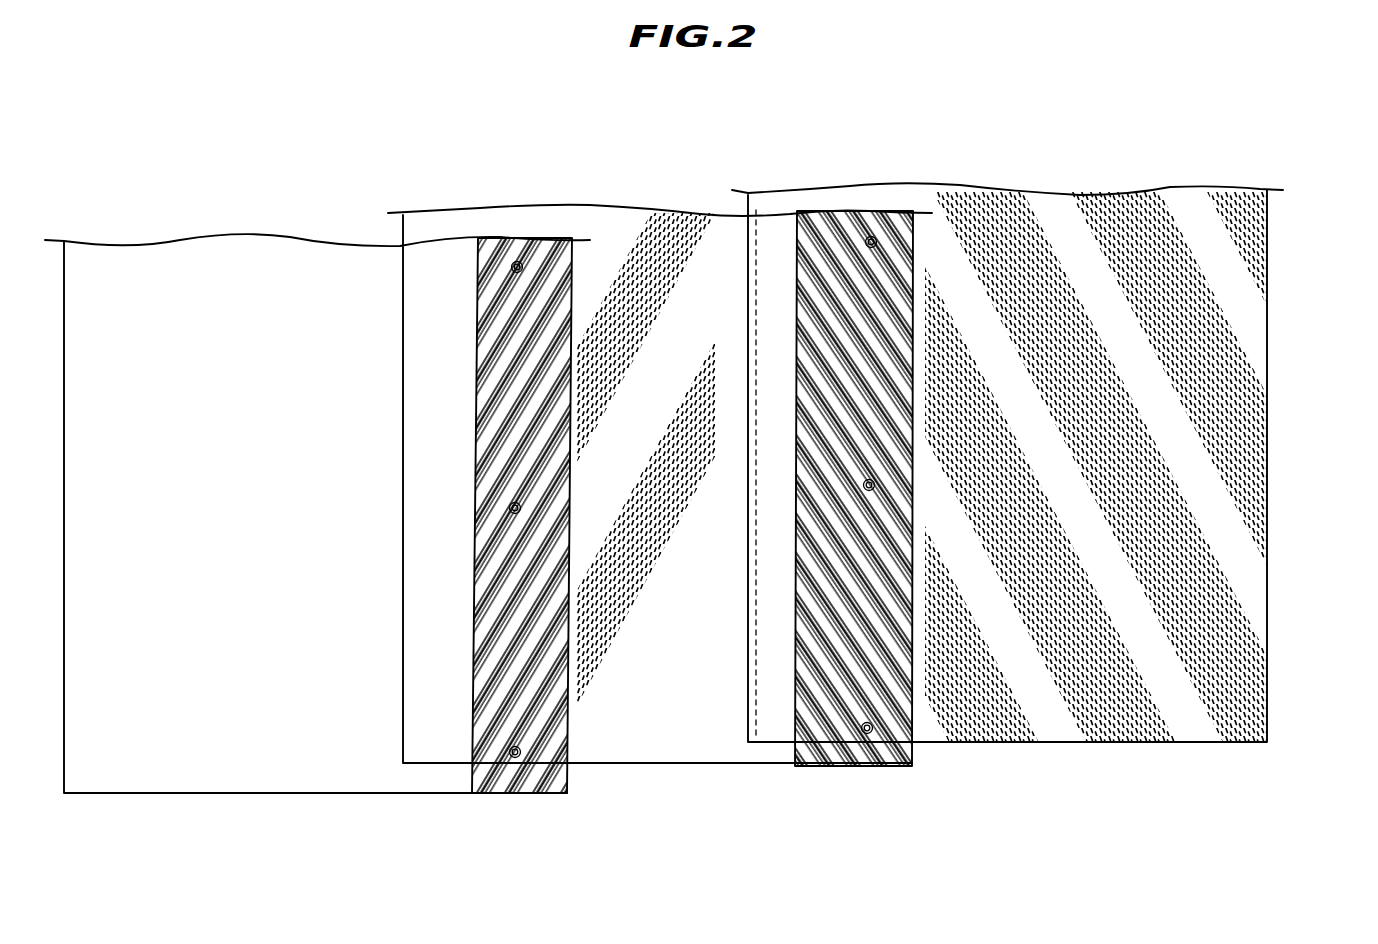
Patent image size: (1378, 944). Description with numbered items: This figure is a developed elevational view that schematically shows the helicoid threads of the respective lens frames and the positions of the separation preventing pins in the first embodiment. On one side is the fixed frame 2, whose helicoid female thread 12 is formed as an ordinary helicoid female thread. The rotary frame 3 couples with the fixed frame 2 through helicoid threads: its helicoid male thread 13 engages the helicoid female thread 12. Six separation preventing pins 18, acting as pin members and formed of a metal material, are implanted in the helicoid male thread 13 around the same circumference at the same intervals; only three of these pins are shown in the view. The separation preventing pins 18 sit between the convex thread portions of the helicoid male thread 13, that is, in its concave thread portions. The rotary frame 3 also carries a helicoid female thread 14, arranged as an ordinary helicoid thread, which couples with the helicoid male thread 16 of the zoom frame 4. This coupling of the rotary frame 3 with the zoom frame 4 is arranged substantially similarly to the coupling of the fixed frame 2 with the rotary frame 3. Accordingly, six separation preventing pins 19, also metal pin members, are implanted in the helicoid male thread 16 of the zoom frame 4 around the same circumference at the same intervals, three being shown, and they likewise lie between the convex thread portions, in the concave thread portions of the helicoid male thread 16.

The fixed frame 2 is at (1063, 725).
The rotary frame 3 is at (672, 737).
The zoom frame 4 is at (259, 773).
The helicoid female thread 12 is at (1247, 205).
The helicoid male thread 13 is at (810, 753).
The helicoid female thread 14 is at (629, 228).
The helicoid male thread 16 is at (537, 777).
The separation preventing pins 18 is at (868, 238).
The separation preventing pins 19 is at (521, 262).